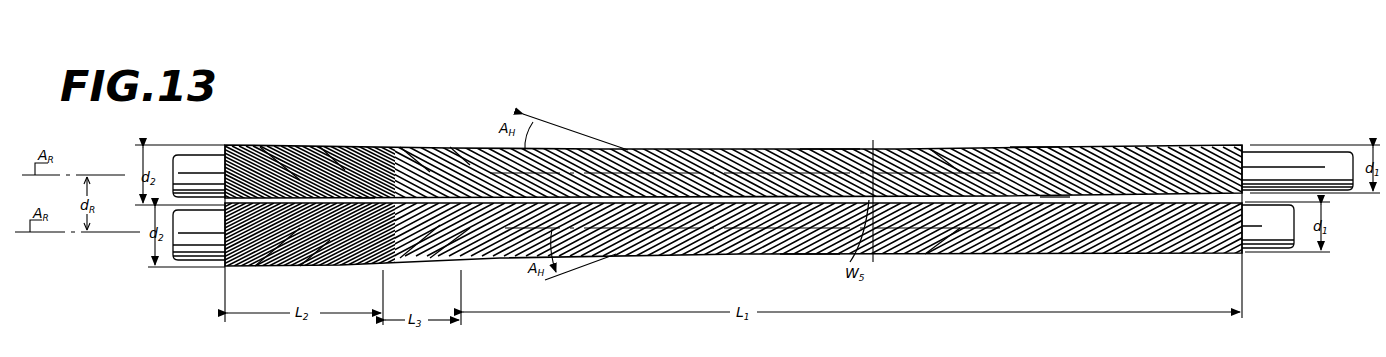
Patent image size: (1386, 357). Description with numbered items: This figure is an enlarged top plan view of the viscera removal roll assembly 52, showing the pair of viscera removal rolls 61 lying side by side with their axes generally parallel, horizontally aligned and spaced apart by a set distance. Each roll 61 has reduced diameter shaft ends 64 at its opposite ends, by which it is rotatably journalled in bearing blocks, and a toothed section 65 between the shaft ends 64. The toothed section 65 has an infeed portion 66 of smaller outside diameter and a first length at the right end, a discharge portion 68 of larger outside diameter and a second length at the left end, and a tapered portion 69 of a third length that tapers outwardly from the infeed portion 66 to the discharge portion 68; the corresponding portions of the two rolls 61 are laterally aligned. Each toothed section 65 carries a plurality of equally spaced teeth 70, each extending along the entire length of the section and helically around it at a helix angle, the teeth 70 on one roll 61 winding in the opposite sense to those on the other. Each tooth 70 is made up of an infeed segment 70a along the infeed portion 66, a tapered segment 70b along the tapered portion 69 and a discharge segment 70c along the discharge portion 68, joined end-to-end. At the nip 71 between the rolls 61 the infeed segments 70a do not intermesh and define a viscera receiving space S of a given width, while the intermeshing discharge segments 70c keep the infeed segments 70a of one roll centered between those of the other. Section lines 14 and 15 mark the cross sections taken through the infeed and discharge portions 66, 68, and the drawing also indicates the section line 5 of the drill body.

The drill 5 is at (1055, 196).
The section line 14 is at (1150, 127).
The section line 15 is at (391, 78).
The viscera removal roll assembly 52 is at (1240, 126).
The viscera removal roll 61 is at (897, 138).
The shaft end 64 is at (197, 160).
The toothed section 65 is at (823, 148).
The infeed portion 66 is at (1033, 152).
The discharge portion 68 is at (326, 156).
The tapered portion 69 is at (448, 255).
The tooth 70 is at (735, 150).
The infeed segment 70a is at (960, 151).
The tapered segment 70b is at (438, 152).
The discharge segment 70c is at (304, 151).
The nip 71 is at (361, 197).